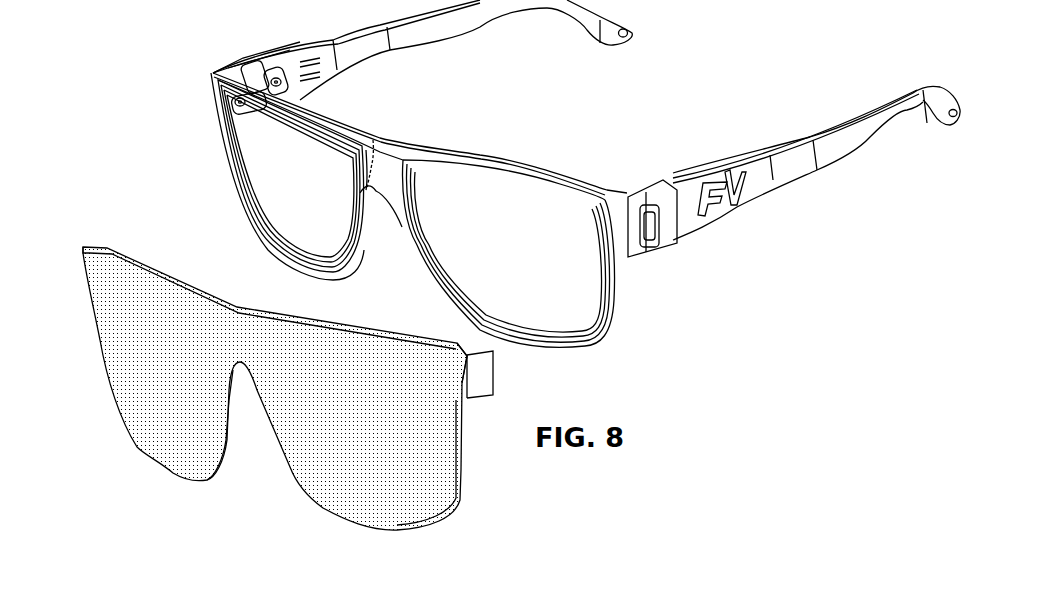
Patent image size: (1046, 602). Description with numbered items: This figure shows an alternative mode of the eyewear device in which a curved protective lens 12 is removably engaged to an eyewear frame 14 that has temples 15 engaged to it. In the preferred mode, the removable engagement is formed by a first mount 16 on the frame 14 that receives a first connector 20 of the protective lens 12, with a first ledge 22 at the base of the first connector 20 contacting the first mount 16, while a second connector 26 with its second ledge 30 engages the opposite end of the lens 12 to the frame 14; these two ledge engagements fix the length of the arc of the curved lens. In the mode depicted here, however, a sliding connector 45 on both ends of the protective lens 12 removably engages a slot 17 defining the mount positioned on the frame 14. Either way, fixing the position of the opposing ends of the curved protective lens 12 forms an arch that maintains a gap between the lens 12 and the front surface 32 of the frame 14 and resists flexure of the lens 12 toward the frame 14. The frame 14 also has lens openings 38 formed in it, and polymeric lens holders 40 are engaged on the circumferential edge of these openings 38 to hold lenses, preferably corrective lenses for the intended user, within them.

The protective lens 12 is at (123, 267).
The eyewear frame 14 is at (533, 173).
The temples 15 is at (373, 43).
The first mount 16 is at (665, 182).
The slot 17 is at (631, 250).
The first connector 20 is at (460, 393).
The first ledge 22 is at (467, 347).
The second connector 26 is at (83, 250).
The second ledge 30 is at (83, 247).
The front surface 32 is at (376, 160).
The lens openings 38 is at (303, 190).
The polymeric lens holders 40 is at (460, 313).
The sliding connector 45 is at (493, 390).